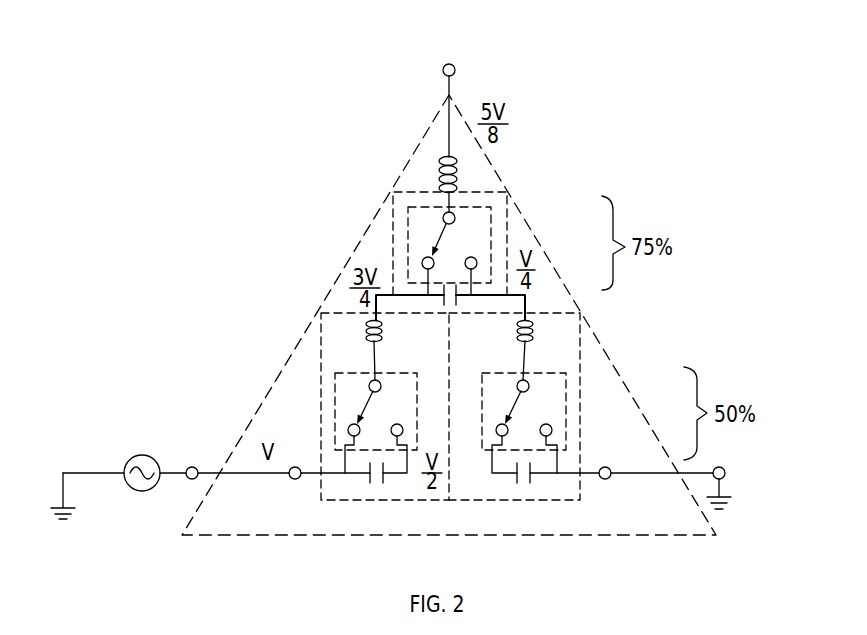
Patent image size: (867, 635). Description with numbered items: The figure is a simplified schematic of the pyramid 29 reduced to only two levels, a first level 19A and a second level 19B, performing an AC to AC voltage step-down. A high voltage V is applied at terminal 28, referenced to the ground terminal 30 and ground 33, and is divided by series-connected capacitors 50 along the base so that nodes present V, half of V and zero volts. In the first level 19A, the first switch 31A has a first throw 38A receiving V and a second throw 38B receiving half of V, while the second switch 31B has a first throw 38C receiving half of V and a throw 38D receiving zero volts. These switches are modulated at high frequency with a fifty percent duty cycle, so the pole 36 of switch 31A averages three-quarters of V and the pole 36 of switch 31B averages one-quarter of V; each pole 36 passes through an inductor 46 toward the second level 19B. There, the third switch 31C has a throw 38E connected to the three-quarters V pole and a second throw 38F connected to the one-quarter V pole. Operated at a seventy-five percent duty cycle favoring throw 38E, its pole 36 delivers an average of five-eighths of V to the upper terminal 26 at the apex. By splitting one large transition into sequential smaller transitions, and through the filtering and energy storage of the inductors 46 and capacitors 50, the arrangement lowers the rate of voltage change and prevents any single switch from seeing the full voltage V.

The first level 19A is at (200, 371).
The second level 19B is at (246, 253).
The upper terminal 26 is at (449, 63).
The terminal 28 is at (192, 466).
The pyramid 29 is at (418, 148).
The ground terminal 30 is at (719, 466).
The first switch 31A is at (335, 412).
The second switch 31B is at (566, 393).
The third switch 31C is at (478, 193).
The ground 33 is at (725, 489).
The pole 36 is at (369, 387).
The first throw 38A is at (348, 430).
The second throw 38B is at (399, 424).
The first throw 38C is at (502, 424).
The throw 38D is at (552, 432).
The throw 38E is at (425, 258).
The second throw 38F is at (473, 257).
The inductor 46 is at (440, 186).
The capacitor 50 is at (441, 304).